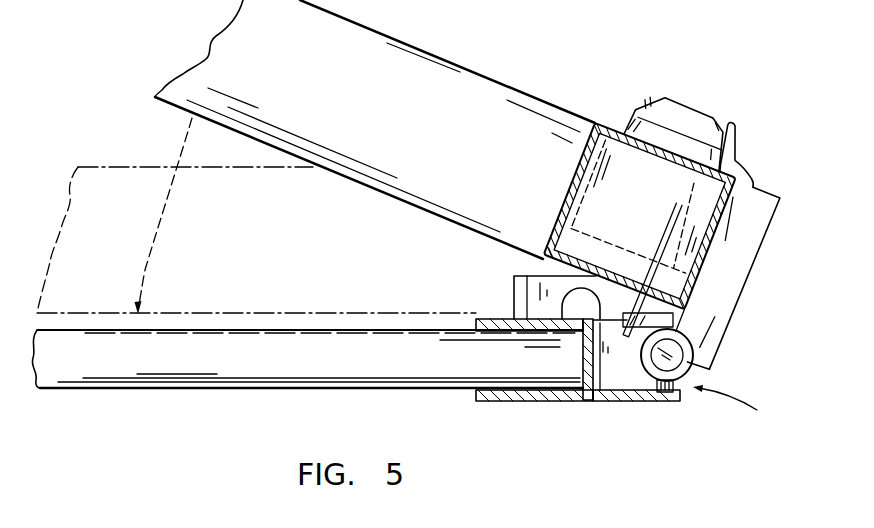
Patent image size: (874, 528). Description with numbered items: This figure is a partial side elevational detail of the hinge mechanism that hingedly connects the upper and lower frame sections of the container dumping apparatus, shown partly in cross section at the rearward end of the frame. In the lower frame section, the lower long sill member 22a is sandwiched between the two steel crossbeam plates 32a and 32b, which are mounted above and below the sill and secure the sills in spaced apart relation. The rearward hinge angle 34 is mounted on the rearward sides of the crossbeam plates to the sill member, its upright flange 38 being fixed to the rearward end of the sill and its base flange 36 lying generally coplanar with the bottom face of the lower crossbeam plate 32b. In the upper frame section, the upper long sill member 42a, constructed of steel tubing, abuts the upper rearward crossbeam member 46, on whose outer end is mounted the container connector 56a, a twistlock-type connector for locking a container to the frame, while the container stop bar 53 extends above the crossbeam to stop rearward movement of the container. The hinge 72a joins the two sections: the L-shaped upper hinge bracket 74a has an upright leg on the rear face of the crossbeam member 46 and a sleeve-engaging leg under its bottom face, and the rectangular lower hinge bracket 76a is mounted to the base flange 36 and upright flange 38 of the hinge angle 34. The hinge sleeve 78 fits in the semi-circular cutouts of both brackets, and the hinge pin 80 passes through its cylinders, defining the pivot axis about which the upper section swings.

The upper long sill member 42a is at (460, 105).
The upper rearward crossbeam member 46 is at (610, 123).
The container connector 56a is at (688, 107).
The container stop bar 53 is at (733, 158).
The upper hinge bracket 74a is at (742, 258).
The hinge sleeve 78 is at (720, 343).
The hinge 72a is at (677, 365).
The hinge pin 80 is at (742, 410).
The lower hinge bracket 76a is at (623, 357).
The base flange 36 is at (638, 412).
The rearward hinge angle 34 is at (610, 403).
The upright flange 38 is at (557, 392).
The steel crossbeam plate 32b is at (508, 402).
The lower long sill member 22a is at (433, 377).
The steel crossbeam plate 32a is at (497, 318).